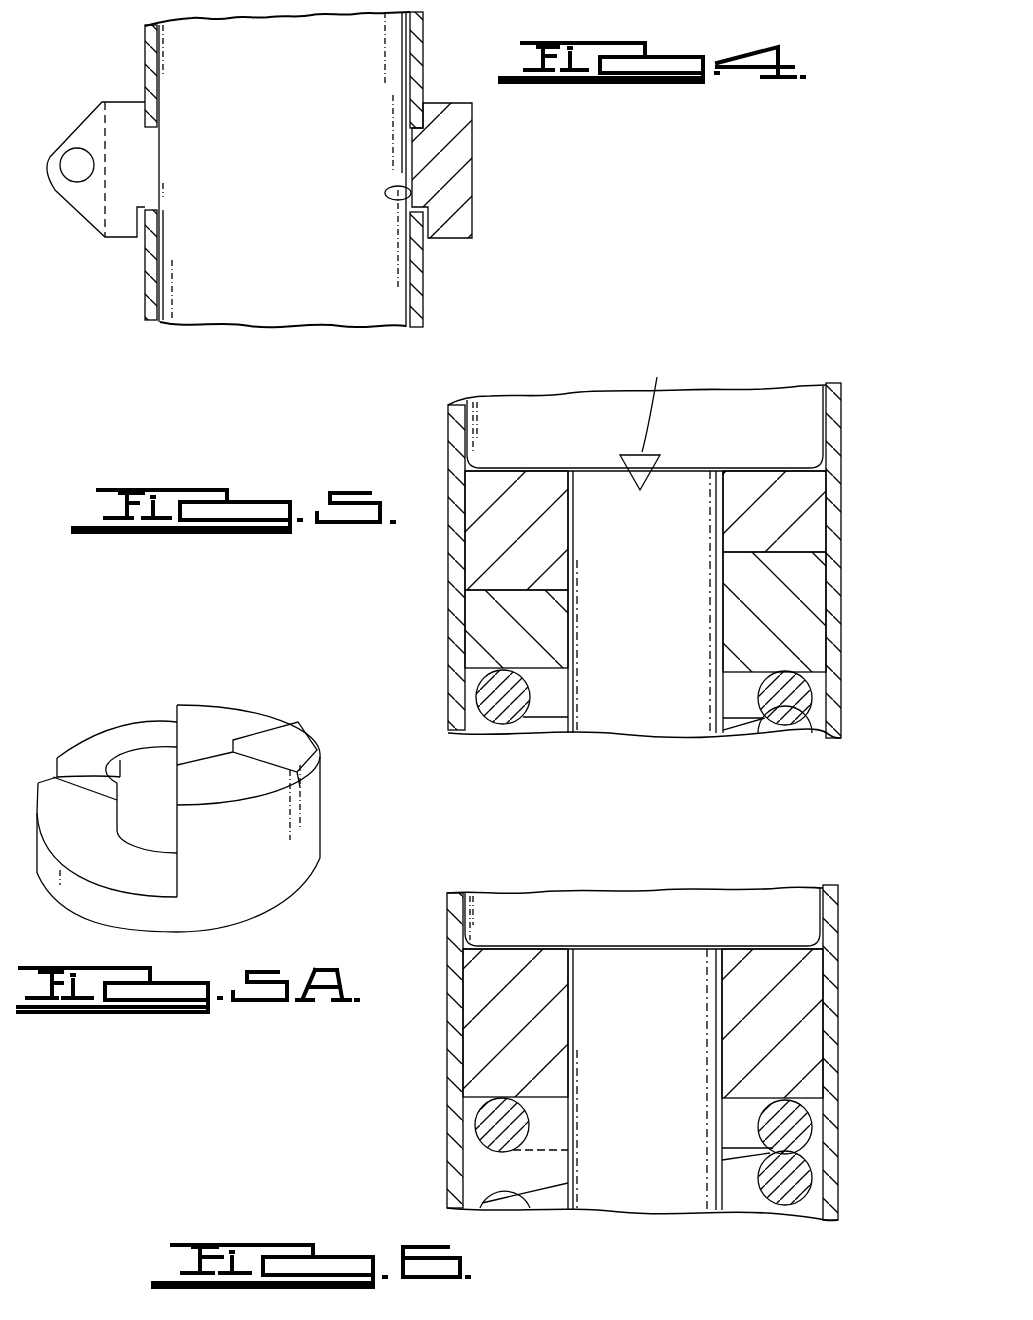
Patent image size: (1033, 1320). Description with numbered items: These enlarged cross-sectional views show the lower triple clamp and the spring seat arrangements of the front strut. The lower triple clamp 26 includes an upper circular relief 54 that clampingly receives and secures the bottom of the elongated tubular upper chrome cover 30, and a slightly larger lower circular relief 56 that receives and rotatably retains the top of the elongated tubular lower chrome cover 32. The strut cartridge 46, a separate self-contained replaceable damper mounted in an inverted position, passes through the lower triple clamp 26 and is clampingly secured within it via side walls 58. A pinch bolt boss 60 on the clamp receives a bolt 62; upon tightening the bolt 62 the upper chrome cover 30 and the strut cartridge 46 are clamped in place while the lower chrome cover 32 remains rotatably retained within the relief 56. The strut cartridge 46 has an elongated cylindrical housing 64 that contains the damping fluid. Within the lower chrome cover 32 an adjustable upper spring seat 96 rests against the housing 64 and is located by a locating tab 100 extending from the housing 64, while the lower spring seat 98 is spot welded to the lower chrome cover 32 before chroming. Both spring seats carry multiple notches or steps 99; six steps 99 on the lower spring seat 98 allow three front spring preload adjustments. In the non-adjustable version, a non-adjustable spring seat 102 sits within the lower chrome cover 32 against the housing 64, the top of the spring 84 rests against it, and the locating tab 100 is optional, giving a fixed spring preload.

In FIG. 4, the lower triple clamp 26 is at (458, 145).
In FIG. 4, the upper chrome cover 30 is at (417, 33).
In FIG. 4, the lower chrome cover 32 is at (417, 297).
In FIG. 5, the lower chrome cover 32 is at (828, 388).
In FIG. 6, the lower chrome cover 32 is at (833, 893).
In FIG. 4, the strut cartridge 46 is at (243, 302).
In FIG. 5, the strut cartridge 46 is at (715, 402).
In FIG. 6, the strut cartridge 46 is at (650, 905).
In FIG. 4, the upper circular relief 54 is at (144, 92).
In FIG. 4, the lower circular relief 56 is at (172, 246).
In FIG. 4, the side walls 58 is at (411, 195).
In FIG. 4, the pinch bolt boss 60 is at (76, 155).
In FIG. 4, the bolt 62 is at (77, 177).
In FIG. 5, the housing 64 is at (465, 428).
In FIG. 6, the housing 64 is at (463, 937).
In FIG. 5, the spring 84 is at (790, 689).
In FIG. 6, the spring 84 is at (795, 1127).
In FIG. 5, the upper spring seat 96 is at (783, 502).
In FIG. 5, the lower spring seat 98 is at (800, 587).
In FIG. 5A, the lower spring seat 98 is at (220, 791).
In FIG. 5A, the steps 99 is at (110, 740).
In FIG. 5, the locating tab 100 is at (653, 417).
In FIG. 6, the non-adjustable spring seat 102 is at (810, 1003).